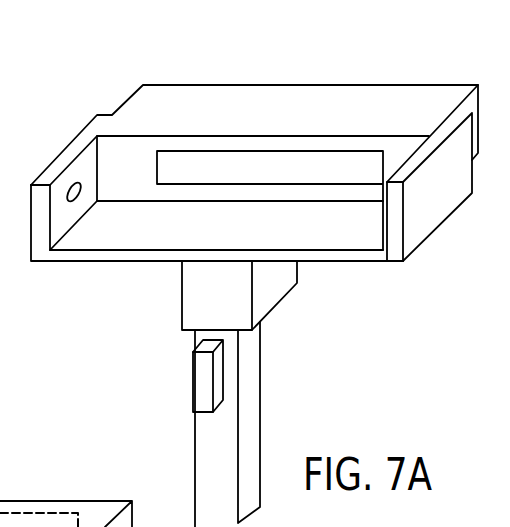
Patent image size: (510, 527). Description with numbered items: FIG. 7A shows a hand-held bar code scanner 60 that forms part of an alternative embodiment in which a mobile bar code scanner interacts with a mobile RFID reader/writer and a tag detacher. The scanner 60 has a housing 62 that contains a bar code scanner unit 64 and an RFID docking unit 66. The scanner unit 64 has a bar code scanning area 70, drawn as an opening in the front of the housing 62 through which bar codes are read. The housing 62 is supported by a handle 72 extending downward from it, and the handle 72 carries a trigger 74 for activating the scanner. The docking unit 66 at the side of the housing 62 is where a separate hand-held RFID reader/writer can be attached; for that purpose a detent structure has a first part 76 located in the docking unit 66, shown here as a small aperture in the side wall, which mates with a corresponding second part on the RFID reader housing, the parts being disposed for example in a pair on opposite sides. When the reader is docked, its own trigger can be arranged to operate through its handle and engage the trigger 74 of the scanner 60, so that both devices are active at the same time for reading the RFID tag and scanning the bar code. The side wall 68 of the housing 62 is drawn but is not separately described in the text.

The hand-held bar code scanner 60 is at (224, 394).
The housing 62 is at (254, 162).
The bar code scanner unit 64 is at (297, 102).
The RFID docking unit 66 is at (438, 209).
The left side wall 68 is at (217, 226).
The bar code scanning area 70 is at (315, 175).
The handle 72 is at (260, 417).
The trigger 74 is at (198, 382).
The first part of detent structure 76 is at (71, 206).